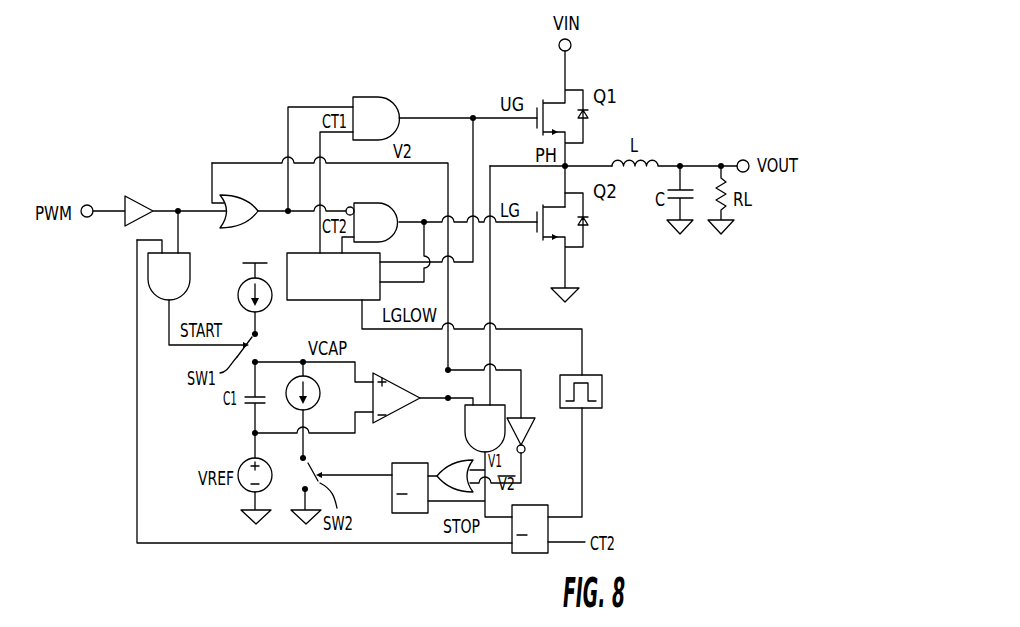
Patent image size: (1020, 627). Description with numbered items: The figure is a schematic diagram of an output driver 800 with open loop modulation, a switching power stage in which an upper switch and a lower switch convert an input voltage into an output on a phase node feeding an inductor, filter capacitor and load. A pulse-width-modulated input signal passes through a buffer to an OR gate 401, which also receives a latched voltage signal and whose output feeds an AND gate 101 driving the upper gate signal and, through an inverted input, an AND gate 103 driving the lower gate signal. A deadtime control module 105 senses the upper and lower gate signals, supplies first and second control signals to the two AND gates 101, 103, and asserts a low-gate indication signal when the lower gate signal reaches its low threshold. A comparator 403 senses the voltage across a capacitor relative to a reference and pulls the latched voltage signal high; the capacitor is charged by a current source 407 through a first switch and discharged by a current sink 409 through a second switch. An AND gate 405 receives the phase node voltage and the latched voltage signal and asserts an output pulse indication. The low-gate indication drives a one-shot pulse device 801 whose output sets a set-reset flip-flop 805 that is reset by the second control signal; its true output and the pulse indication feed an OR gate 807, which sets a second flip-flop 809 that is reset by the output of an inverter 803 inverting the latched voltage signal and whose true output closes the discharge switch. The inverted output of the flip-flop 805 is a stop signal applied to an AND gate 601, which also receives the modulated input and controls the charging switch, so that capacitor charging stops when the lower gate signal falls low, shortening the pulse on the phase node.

The output driver 800 is at (492, 45).
The AND gate 101 is at (390, 131).
The AND gate 103 is at (390, 236).
The deadtime control module 105 is at (286, 275).
The OR gate 401 is at (233, 197).
The comparator 403 is at (388, 412).
The AND gate 405 is at (497, 438).
The current source 407 is at (270, 306).
The current sink 409 is at (318, 388).
The AND gate 601 is at (183, 286).
The one-shot pulse device 801 is at (603, 393).
The inverter 803 is at (526, 431).
The set-reset flip-flop 805 is at (533, 504).
The OR gate 807 is at (458, 461).
The set-reset flip-flop 809 is at (412, 462).